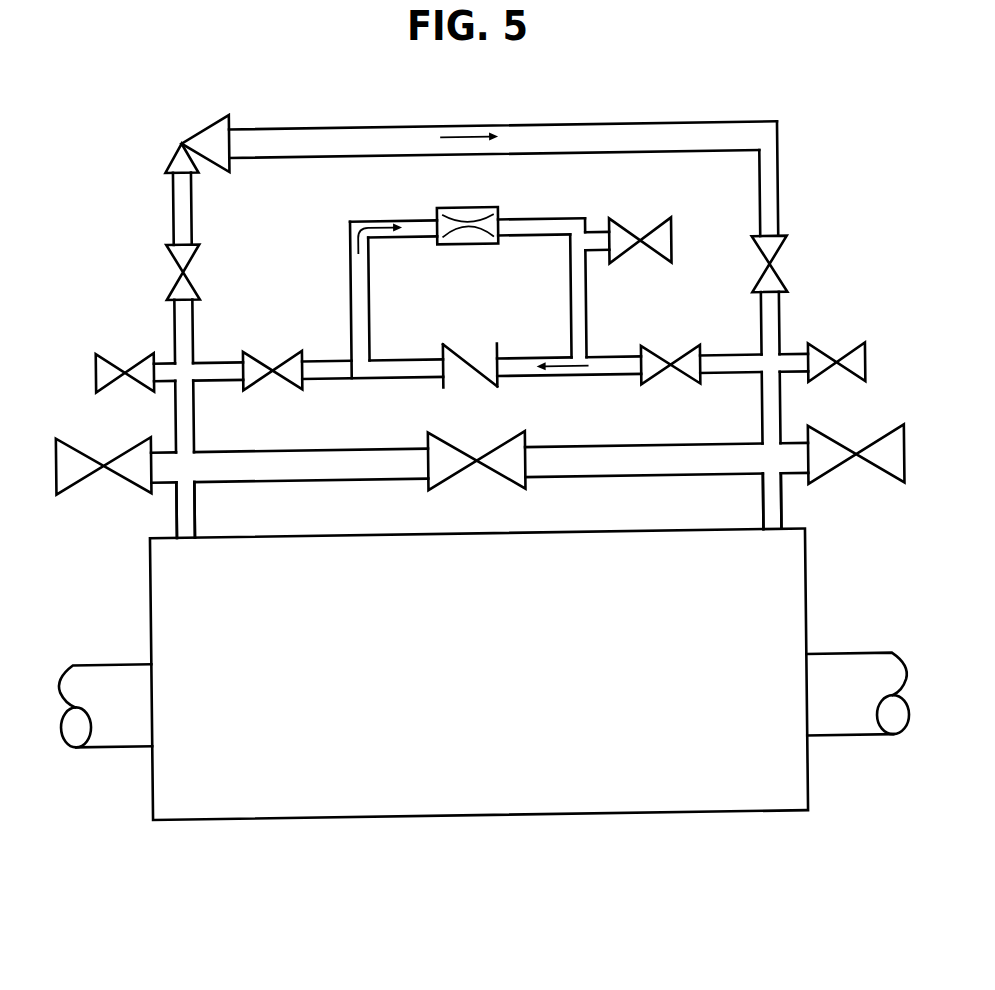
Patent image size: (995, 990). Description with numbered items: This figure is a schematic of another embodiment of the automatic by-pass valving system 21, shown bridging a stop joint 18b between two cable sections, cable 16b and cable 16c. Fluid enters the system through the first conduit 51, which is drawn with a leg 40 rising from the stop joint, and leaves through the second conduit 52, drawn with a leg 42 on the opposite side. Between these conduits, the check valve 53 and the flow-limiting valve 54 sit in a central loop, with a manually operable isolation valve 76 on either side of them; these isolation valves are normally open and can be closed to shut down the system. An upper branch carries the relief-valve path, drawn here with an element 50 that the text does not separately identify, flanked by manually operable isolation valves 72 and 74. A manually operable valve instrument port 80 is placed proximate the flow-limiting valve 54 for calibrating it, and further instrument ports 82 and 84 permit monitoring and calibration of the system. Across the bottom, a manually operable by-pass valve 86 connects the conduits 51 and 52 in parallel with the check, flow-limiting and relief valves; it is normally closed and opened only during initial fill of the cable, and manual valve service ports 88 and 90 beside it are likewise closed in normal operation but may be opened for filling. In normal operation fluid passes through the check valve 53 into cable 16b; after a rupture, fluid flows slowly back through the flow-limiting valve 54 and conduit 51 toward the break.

The automatic by-pass valving system 21 is at (341, 95).
The pump 50 is at (171, 153).
The manually operable isolation valve 72 is at (169, 287).
The manually operable isolation valve 74 is at (786, 284).
The manually operable valve instrument port 80 is at (659, 254).
The flow-limiting valve 54 is at (480, 207).
The check valve 53 is at (498, 353).
The manually operable valve instrument port 82 is at (118, 372).
The manually operable isolation valve 76 is at (262, 374).
The manually operable valve instrument port 84 is at (827, 375).
The manual valve service port 88 is at (77, 481).
The manually operable by-pass valve 86 is at (451, 477).
The manual valve service port 90 is at (842, 467).
The pipe 42 is at (174, 481).
The second conduit 52 is at (194, 505).
The pipe 40 is at (759, 484).
The first conduit 51 is at (781, 512).
The cable section 16c is at (105, 674).
The next cable 16b is at (857, 672).
The stop joint 18b is at (754, 797).